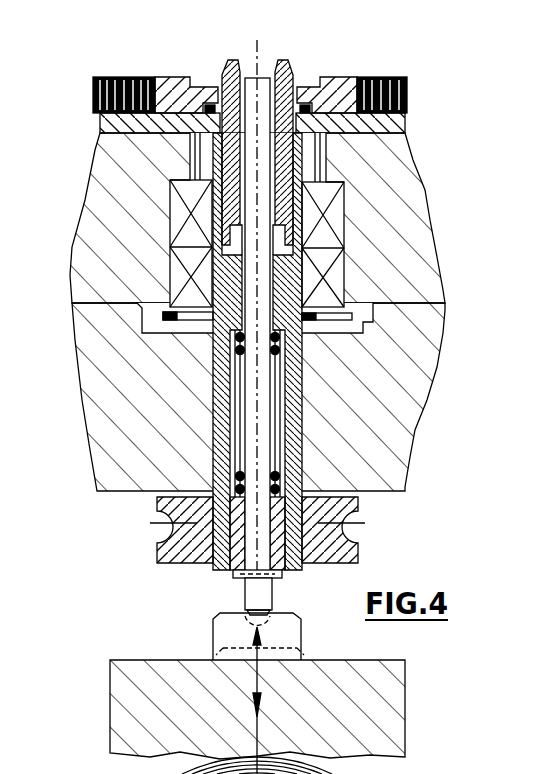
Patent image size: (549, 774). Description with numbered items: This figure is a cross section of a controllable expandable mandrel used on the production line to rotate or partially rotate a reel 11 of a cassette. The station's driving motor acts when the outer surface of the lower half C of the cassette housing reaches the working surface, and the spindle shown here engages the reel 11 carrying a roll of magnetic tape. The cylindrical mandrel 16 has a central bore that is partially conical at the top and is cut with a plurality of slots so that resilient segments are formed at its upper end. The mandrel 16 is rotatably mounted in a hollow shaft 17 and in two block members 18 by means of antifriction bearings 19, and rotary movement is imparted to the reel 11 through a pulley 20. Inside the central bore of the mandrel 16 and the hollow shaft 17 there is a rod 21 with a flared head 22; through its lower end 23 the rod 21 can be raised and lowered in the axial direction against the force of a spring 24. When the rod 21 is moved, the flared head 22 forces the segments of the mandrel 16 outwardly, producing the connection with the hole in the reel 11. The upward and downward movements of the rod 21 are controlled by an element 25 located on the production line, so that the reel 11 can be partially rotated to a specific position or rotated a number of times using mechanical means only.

The reel 11 is at (343, 93).
The lower half of the cassette housing C is at (100, 122).
The cylindrical mandrel 16 is at (223, 70).
The hollow shaft 17 is at (230, 277).
The block members 18 is at (107, 330).
The antifriction bearings 19 is at (337, 278).
The pulley 20 is at (172, 547).
The rod 21 is at (262, 148).
The flared head 22 is at (267, 68).
The lower end of the rod 23 is at (252, 593).
The spring 24 is at (237, 347).
The element 25 is at (143, 685).